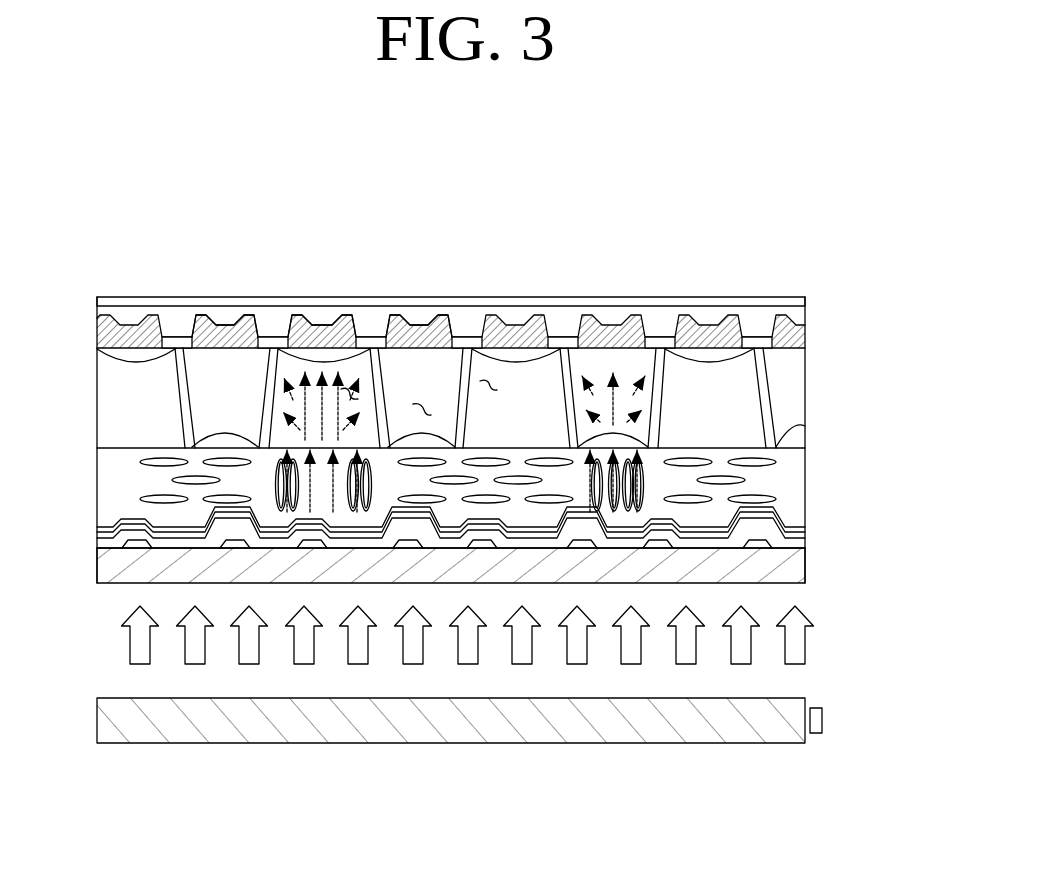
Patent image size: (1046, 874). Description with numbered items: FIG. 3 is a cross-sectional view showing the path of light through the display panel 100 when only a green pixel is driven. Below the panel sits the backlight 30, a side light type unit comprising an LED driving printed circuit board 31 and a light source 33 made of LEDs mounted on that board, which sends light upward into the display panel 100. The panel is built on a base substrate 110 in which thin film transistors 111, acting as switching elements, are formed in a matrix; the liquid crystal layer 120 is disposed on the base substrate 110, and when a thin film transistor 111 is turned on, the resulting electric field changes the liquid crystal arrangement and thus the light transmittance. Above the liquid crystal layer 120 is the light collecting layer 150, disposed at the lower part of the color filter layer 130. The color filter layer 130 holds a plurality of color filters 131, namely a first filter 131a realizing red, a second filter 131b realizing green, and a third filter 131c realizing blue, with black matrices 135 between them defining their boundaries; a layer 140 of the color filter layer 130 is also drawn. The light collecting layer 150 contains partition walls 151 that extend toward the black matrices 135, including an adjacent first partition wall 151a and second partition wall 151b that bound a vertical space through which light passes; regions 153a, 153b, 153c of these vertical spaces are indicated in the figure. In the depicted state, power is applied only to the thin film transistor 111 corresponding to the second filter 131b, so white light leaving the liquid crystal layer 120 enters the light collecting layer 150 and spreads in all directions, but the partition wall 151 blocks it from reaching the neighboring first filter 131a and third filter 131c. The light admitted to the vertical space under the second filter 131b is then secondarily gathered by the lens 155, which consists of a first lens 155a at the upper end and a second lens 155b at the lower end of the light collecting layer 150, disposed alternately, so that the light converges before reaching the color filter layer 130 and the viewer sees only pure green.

The display panel 100 is at (485, 166).
The base substrate 110 is at (806, 567).
The thin film transistor 111 is at (806, 529).
The liquid crystal layer 120 is at (490, 575).
The color filter layer 130 is at (498, 270).
The color filter 131 is at (407, 252).
The first filter 131a is at (225, 297).
The second filter 131b is at (325, 297).
The third filter 131c is at (410, 297).
The black matrix 135 is at (473, 297).
The upper base substrate 140 is at (762, 297).
The light collecting layer 150 is at (498, 543).
The partition wall 151 is at (443, 610).
The first partition wall 151a is at (183, 428).
The second partition wall 151b is at (268, 435).
The first region 153a is at (350, 398).
The second region 153b is at (423, 412).
The third region 153c is at (490, 385).
The lens 155 is at (590, 792).
The first lens 155a is at (522, 297).
The second lens 155b is at (612, 445).
The backlight 30 is at (501, 750).
The LED driving printed circuit board 31 is at (785, 748).
The light source 33 is at (822, 720).